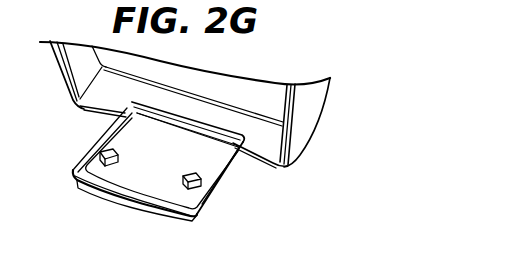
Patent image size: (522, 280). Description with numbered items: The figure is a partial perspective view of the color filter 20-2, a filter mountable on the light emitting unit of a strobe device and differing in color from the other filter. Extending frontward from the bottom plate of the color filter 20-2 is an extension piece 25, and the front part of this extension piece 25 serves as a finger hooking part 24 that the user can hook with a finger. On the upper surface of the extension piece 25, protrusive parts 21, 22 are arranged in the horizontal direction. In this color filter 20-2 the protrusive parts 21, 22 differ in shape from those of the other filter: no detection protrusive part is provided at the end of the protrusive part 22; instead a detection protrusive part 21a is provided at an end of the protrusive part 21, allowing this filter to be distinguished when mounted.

The color filter 20-2 is at (262, 197).
The protrusive part 21 is at (145, 183).
The detection protrusive part 21a is at (103, 141).
The protrusive part 22 is at (201, 186).
The finger hooking part 24 is at (131, 207).
The extension piece 25 is at (135, 167).